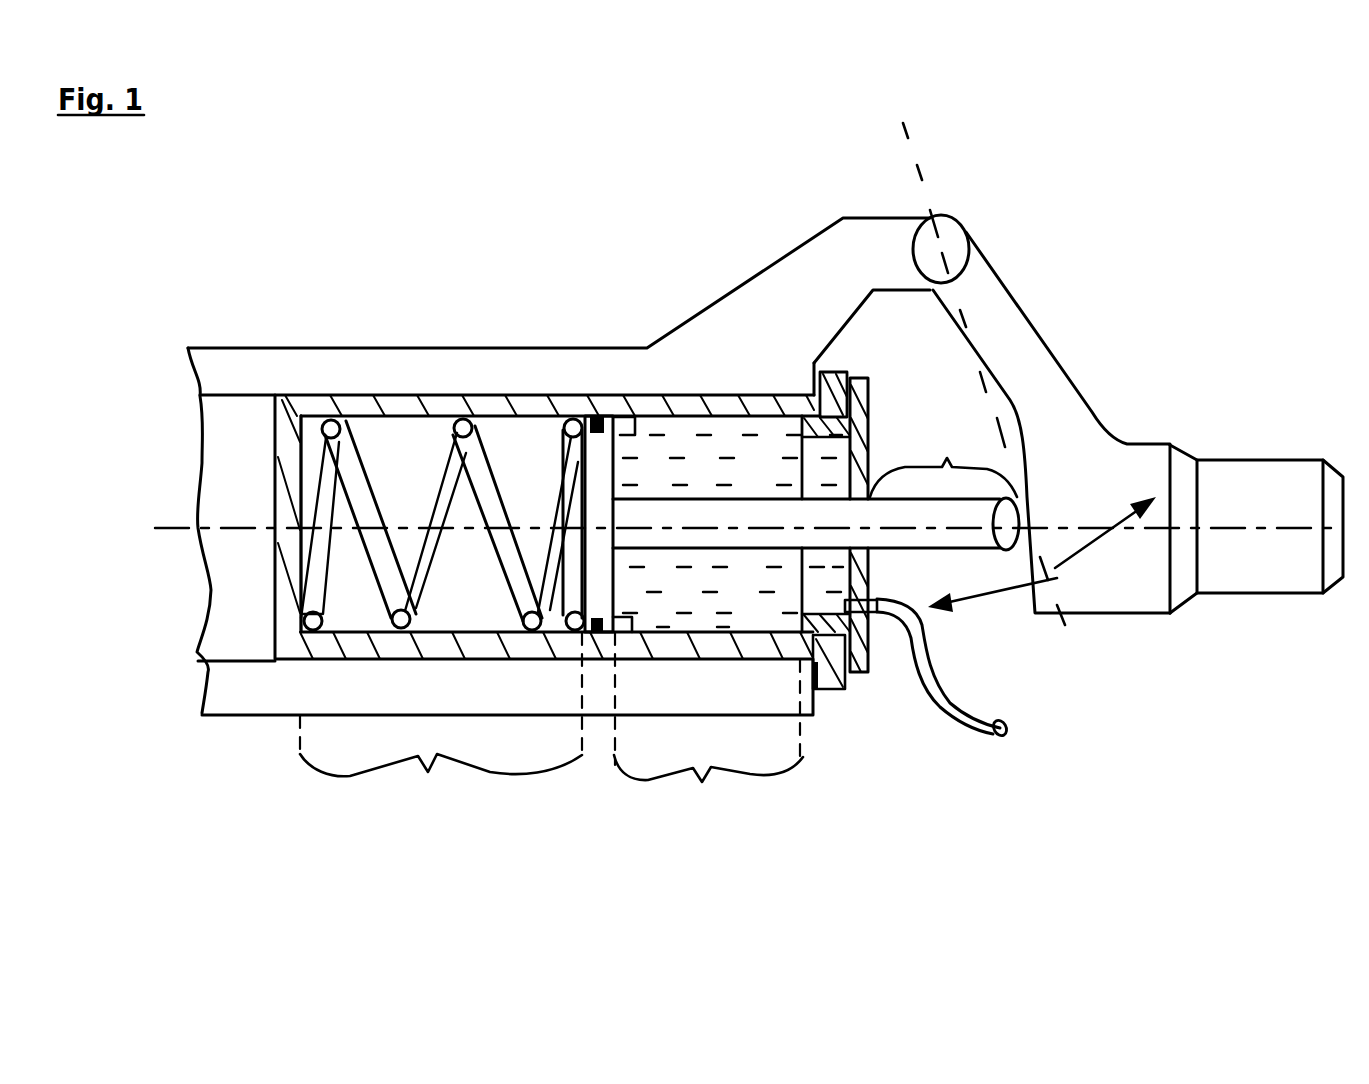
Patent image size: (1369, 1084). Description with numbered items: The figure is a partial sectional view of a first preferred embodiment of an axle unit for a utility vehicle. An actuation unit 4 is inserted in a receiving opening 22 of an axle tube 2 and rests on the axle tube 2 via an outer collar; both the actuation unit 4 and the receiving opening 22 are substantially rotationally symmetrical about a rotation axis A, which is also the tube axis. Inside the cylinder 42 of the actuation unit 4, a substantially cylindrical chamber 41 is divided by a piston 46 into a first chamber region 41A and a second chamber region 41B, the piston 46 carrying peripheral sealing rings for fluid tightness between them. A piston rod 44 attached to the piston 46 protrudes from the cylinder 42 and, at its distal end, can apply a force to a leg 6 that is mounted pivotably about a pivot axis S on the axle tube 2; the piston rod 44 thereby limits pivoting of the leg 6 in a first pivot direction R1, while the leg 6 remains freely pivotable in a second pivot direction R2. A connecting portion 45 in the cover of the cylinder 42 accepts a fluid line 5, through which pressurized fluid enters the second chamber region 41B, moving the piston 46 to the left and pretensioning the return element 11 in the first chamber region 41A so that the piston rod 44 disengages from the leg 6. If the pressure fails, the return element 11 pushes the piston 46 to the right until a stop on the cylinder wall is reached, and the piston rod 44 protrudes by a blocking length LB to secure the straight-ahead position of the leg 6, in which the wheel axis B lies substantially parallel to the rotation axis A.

The axle tube 2 is at (333, 366).
The receiving opening 22 is at (253, 417).
The return element 11 is at (350, 470).
The piston 46 is at (601, 432).
The chamber 41 is at (283, 813).
The first chamber region 41A is at (447, 857).
The second chamber region 41B is at (760, 843).
The cylinder 42 is at (623, 858).
The piston rod 44 is at (895, 695).
The actuation unit 4 is at (1033, 820).
The connecting portion 45 is at (1067, 780).
The fluid line 5 is at (1190, 815).
The leg 6 is at (1070, 407).
The pivot axis S is at (941, 249).
The blocking length LB is at (943, 453).
The wheel axis B is at (1227, 525).
The rotation axis A is at (238, 531).
The first pivot direction R1 is at (1000, 597).
The second pivot direction R2 is at (1057, 568).